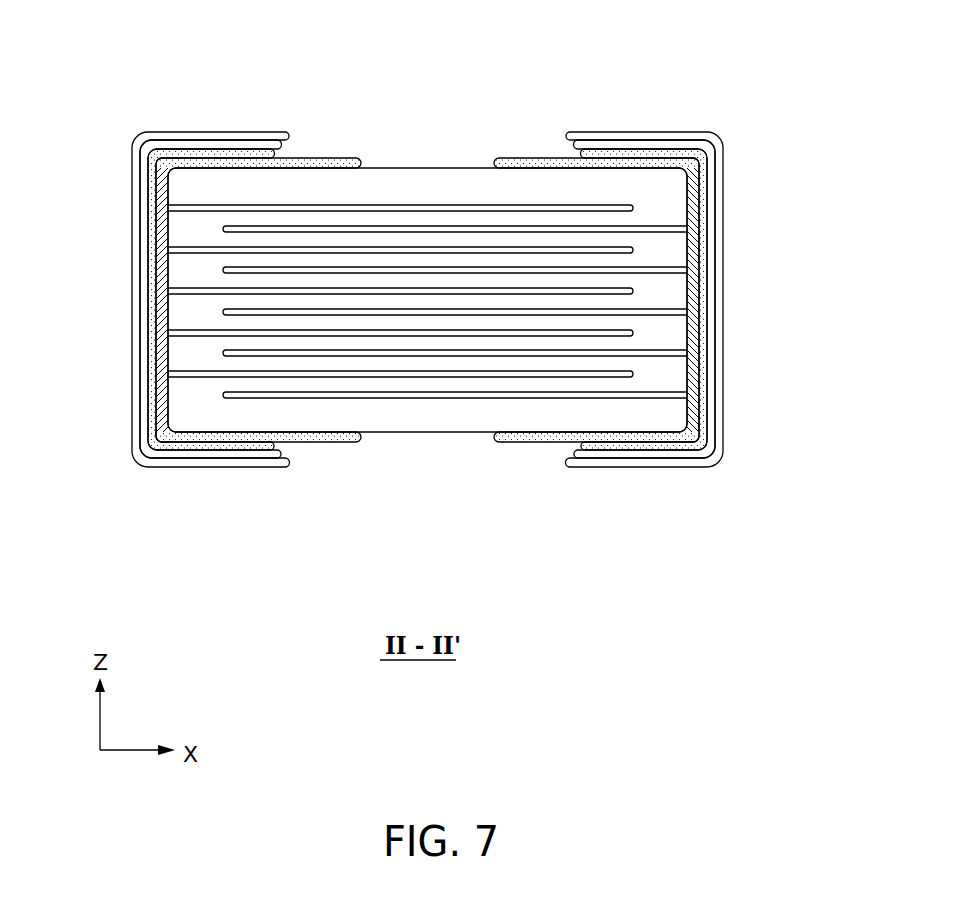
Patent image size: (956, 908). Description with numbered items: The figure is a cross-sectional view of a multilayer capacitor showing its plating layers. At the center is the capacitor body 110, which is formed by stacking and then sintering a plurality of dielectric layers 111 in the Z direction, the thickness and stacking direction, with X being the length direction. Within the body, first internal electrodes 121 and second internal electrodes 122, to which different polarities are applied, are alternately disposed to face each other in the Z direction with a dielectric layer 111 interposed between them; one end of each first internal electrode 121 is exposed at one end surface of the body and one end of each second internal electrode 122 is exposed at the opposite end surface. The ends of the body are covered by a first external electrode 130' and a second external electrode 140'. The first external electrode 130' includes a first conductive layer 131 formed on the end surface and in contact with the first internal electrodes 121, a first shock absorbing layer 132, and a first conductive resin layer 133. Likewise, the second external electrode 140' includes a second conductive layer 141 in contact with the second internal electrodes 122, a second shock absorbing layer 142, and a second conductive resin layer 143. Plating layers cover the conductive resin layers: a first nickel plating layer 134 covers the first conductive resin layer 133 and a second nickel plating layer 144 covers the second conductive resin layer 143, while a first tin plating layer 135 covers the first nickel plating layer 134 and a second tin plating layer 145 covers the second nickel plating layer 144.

The capacitor body 110 is at (490, 240).
The dielectric layer 111 is at (613, 219).
The first internal electrode 121 is at (595, 206).
The second internal electrode 122 is at (660, 224).
The first external electrode 130' is at (209, 369).
The first conductive layer 131 is at (160, 434).
The first shock absorbing layer 132 is at (259, 363).
The first conductive resin layer 133 is at (228, 447).
The first nickel plating layer 134 is at (140, 450).
The first tin plating layer 135 is at (133, 392).
The second external electrode 140' is at (645, 369).
The second conductive layer 141 is at (702, 440).
The second shock absorbing layer 142 is at (596, 362).
The second conductive resin layer 143 is at (610, 447).
The second nickel plating layer 144 is at (719, 452).
The second tin plating layer 145 is at (725, 392).